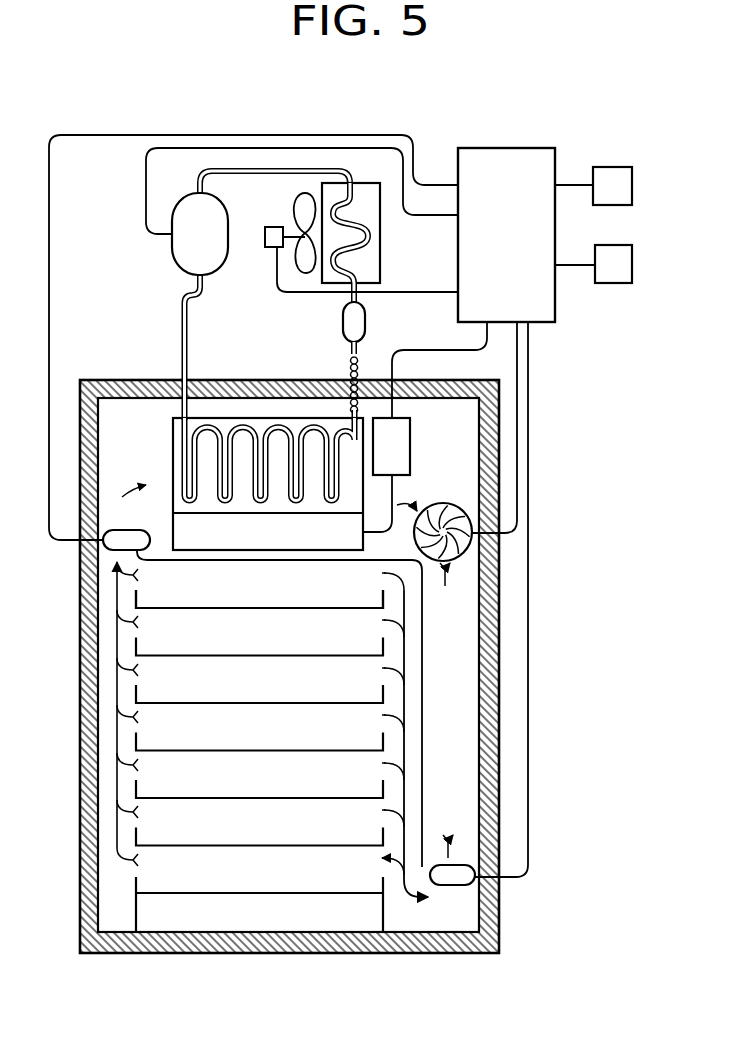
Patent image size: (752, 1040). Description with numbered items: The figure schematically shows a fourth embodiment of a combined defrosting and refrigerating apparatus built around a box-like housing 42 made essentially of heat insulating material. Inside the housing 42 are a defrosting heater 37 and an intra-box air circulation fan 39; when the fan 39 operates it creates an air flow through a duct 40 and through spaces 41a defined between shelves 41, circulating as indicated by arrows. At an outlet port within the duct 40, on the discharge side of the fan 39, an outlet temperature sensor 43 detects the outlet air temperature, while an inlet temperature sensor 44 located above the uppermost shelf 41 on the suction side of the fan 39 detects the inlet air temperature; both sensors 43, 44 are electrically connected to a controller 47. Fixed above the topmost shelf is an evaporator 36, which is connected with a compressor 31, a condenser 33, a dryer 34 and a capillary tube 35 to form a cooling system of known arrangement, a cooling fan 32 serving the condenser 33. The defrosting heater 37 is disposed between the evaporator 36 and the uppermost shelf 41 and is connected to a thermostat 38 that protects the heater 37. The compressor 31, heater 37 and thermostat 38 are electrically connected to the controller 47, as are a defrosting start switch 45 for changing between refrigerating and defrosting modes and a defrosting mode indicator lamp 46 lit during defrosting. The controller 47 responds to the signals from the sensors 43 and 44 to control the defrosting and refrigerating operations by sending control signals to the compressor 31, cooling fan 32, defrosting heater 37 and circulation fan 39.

The compressor 31 is at (173, 267).
The cooling fan 32 is at (297, 212).
The condenser 33 is at (380, 237).
The dryer 34 is at (365, 311).
The capillary tube 35 is at (347, 367).
The evaporator 36 is at (173, 447).
The defrosting heater 37 is at (173, 530).
The thermostat 38 is at (410, 428).
The intra-box air circulation fan 39 is at (469, 545).
The duct 40 is at (458, 685).
The shelves 41 is at (135, 748).
The spaces 41a is at (288, 594).
The box-like housing 42 is at (149, 953).
The temperature sensor (Th1) 43 is at (463, 886).
The temperature sensor (Th2) 44 is at (100, 545).
The defrosting start switch 45 is at (633, 181).
The defrosting mode indicator lamp 46 is at (633, 262).
The controller 47 is at (500, 148).